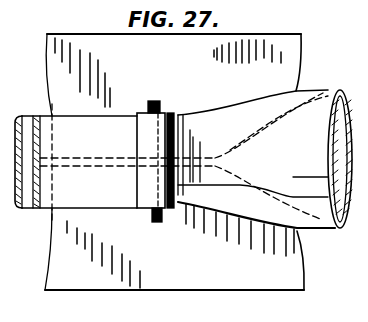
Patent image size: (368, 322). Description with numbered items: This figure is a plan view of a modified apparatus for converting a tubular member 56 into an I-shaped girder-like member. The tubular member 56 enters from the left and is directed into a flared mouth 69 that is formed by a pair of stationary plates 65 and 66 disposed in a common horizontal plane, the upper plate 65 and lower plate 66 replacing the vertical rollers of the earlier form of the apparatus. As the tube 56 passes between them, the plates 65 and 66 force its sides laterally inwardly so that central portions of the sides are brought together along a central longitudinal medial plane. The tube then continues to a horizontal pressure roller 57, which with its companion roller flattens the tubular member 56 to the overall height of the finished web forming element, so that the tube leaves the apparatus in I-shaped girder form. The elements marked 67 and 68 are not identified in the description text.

The tubular member 56 is at (306, 143).
The horizontal pressure roller 57 is at (140, 132).
The stationary plate 65 is at (297, 50).
The stationary plate 66 is at (287, 276).
The hose 67 is at (80, 150).
The hose passage 68 is at (88, 170).
The flared mouth 69 is at (302, 248).